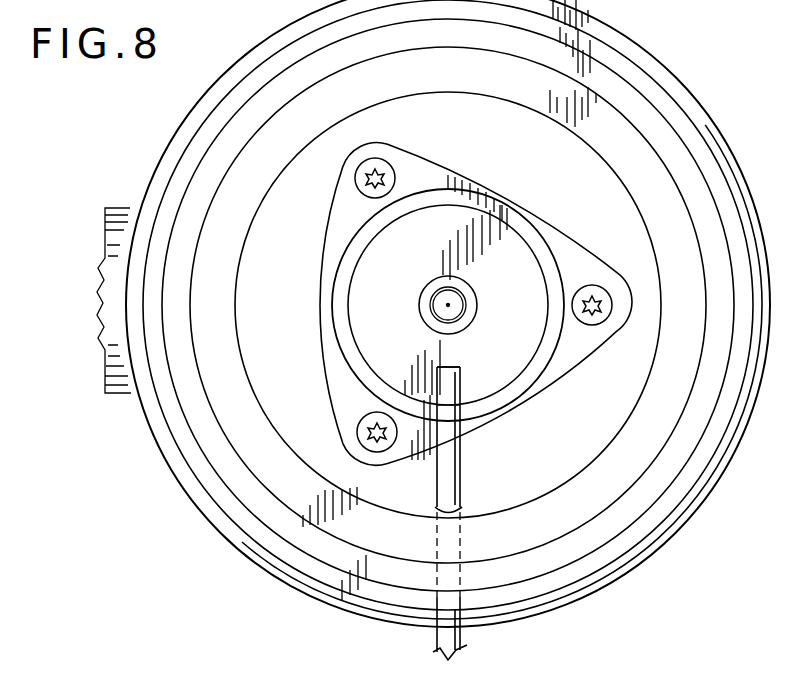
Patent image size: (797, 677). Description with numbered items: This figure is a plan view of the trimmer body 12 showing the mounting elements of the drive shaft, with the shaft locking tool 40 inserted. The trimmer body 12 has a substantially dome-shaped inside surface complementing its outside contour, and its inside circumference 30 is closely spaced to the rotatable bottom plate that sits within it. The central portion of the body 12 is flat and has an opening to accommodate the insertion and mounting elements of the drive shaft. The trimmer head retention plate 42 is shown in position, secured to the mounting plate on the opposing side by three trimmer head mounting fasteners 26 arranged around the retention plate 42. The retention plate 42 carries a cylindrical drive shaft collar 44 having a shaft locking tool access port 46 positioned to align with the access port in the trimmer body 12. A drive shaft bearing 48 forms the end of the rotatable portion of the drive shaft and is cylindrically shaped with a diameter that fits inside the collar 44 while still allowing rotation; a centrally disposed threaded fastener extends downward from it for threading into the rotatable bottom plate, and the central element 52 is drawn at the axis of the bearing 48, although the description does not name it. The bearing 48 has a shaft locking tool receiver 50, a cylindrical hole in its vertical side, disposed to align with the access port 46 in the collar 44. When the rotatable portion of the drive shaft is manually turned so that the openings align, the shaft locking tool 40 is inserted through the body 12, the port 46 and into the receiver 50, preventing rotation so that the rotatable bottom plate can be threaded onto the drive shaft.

The trimmer body 12 is at (690, 100).
The inside circumference 30 is at (688, 124).
The trimmer head mounting fasteners 26 is at (364, 168).
The trimmer head retention plate 42 is at (588, 346).
The drive shaft collar 44 is at (537, 230).
The drive shaft bearing 48 is at (515, 260).
The pivot pin 52 is at (432, 305).
The shaft locking tool 40 is at (460, 462).
The shaft locking tool receiver 50 is at (463, 372).
The shaft locking tool access port 46 is at (462, 410).